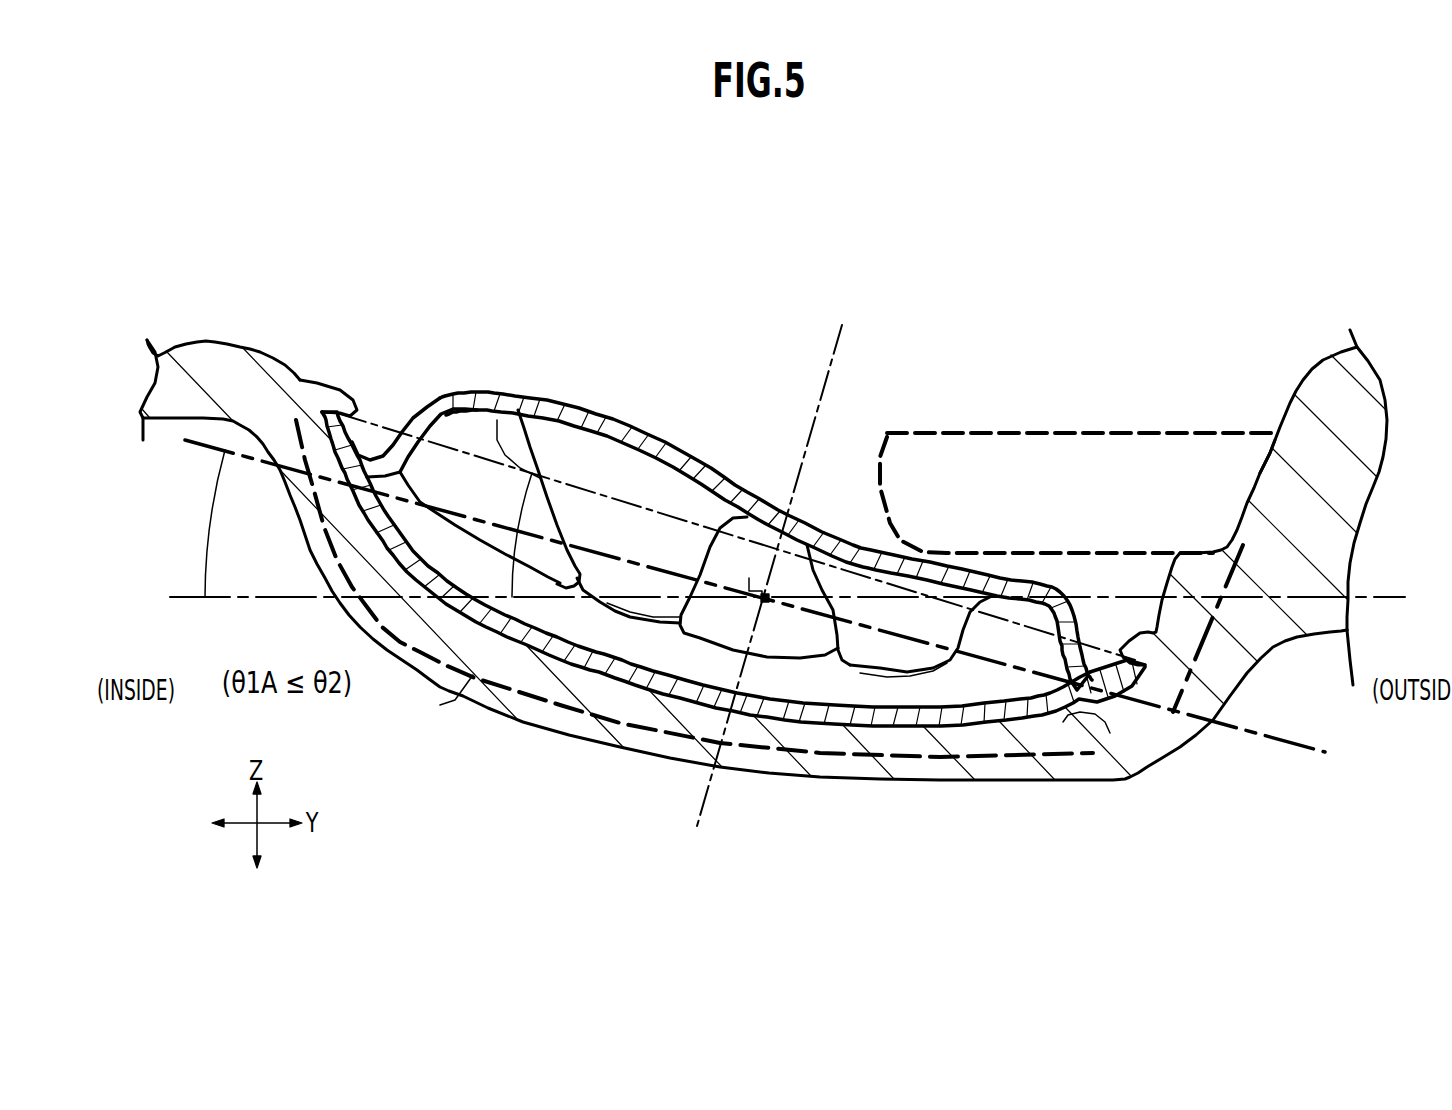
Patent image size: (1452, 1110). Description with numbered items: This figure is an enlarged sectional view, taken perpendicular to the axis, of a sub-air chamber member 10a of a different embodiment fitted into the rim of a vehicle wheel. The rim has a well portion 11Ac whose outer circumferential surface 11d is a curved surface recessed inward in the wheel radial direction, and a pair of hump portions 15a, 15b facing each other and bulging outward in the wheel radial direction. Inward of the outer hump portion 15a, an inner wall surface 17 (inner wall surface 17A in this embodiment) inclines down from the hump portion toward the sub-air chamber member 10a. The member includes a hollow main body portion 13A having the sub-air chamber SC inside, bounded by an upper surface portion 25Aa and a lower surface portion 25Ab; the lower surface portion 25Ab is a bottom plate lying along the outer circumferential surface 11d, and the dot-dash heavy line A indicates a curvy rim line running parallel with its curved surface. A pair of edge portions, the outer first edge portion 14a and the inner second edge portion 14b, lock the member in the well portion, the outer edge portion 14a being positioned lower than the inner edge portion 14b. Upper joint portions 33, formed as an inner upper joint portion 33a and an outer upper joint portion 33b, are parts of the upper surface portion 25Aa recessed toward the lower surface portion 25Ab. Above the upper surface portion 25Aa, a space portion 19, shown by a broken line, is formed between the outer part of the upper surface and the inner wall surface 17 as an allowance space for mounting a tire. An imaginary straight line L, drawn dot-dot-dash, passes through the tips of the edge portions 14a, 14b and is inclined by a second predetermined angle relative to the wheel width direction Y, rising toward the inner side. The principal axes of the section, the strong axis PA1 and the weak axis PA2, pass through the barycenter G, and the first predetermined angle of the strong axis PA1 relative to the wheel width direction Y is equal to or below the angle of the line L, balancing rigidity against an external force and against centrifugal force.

The sub-air chamber member 10a is at (732, 575).
The main body portion 13A is at (766, 515).
The upper surface portion 25Aa is at (703, 463).
The lower surface portion 25Ab is at (545, 655).
The first edge portion 14a is at (1130, 663).
The second edge portion 14b is at (330, 411).
The hump portion 15a is at (1357, 347).
The hump portion 15b is at (220, 340).
The inner wall surface 17 is at (1262, 468).
The inner wall surface 17A is at (1174, 345).
The space portion 19 is at (1035, 501).
The well portion 11Ac is at (1105, 402).
The outer circumferential surface 11d is at (1110, 733).
The upper joint portion 33 is at (627, 620).
The upper joint portion 33a is at (497, 420).
The upper joint portion 33b is at (817, 575).
The sub-air chamber SC is at (705, 634).
The barycenter G is at (767, 597).
The imaginary straight line L is at (400, 428).
The strong axis PA1 is at (1307, 754).
The weak axis PA2 is at (840, 343).
The wheel width direction Y is at (1403, 597).
The curvy rim line A is at (423, 705).